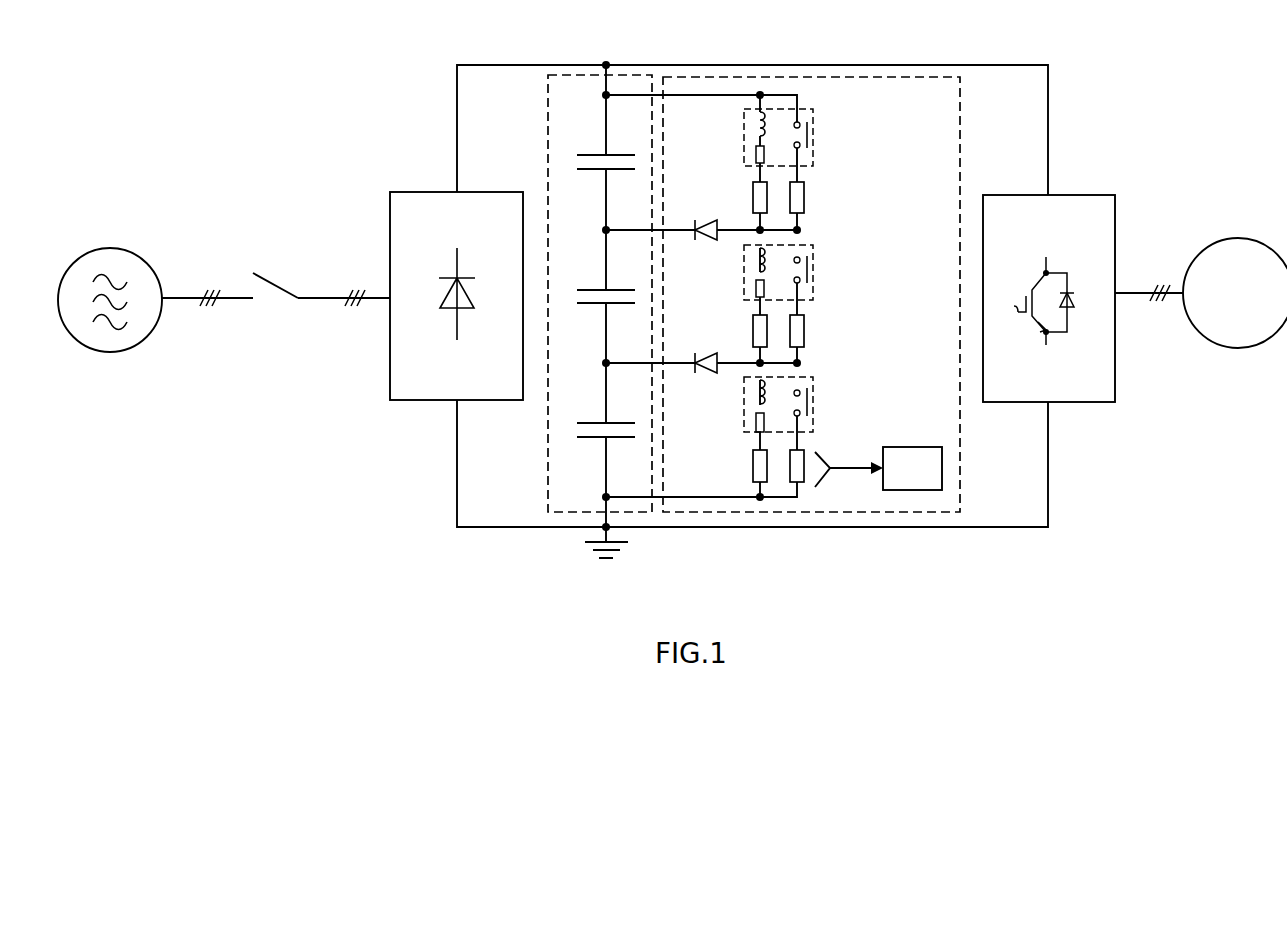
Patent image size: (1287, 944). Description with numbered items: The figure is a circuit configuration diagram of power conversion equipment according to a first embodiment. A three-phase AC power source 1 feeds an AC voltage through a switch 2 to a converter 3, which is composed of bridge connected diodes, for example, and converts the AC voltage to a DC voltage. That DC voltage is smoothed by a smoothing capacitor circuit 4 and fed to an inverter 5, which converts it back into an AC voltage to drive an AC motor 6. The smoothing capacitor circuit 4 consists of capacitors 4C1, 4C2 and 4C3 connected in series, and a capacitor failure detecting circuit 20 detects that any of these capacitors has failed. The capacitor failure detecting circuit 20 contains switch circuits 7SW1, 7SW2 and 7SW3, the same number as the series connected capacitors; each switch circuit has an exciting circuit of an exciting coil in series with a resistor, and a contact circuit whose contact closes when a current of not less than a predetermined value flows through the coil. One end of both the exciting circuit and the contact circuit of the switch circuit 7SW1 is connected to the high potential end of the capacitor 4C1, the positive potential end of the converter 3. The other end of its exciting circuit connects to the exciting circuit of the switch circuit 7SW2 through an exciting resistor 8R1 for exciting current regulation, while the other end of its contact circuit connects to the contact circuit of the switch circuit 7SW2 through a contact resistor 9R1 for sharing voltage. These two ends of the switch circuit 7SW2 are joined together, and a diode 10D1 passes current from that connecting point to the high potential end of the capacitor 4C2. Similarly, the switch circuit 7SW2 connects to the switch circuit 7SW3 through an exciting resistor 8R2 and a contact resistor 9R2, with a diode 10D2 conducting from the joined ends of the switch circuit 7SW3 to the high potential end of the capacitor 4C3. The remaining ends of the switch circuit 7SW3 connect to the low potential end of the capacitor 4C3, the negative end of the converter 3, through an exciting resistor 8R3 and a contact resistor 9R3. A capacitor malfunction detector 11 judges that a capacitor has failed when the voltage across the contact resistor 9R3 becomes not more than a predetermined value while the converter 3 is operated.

The three-phase AC power source 1 is at (110, 248).
The switch 2 is at (278, 282).
The converter 3 is at (420, 192).
The smoothing capacitor circuit 4 is at (589, 75).
The capacitor 4C1 is at (598, 155).
The capacitor 4C2 is at (598, 290).
The capacitor 4C3 is at (598, 423).
The inverter 5 is at (1052, 195).
The AC motor 6 is at (1231, 218).
The switch circuit 7SW1 is at (813, 134).
The switch circuit 7SW2 is at (813, 250).
The switch circuit 7SW3 is at (813, 383).
The exciting resistor 8R1 is at (753, 185).
The exciting resistor 8R2 is at (753, 319).
The exciting resistor 8R3 is at (753, 455).
The contact resistor 9R1 is at (804, 191).
The contact resistor 9R2 is at (804, 322).
The contact resistor 9R3 is at (804, 450).
The diode 10D1 is at (700, 222).
The diode 10D2 is at (700, 354).
The capacitor malfunction detector 11 is at (905, 447).
The capacitor failure detecting circuit 20 is at (777, 77).